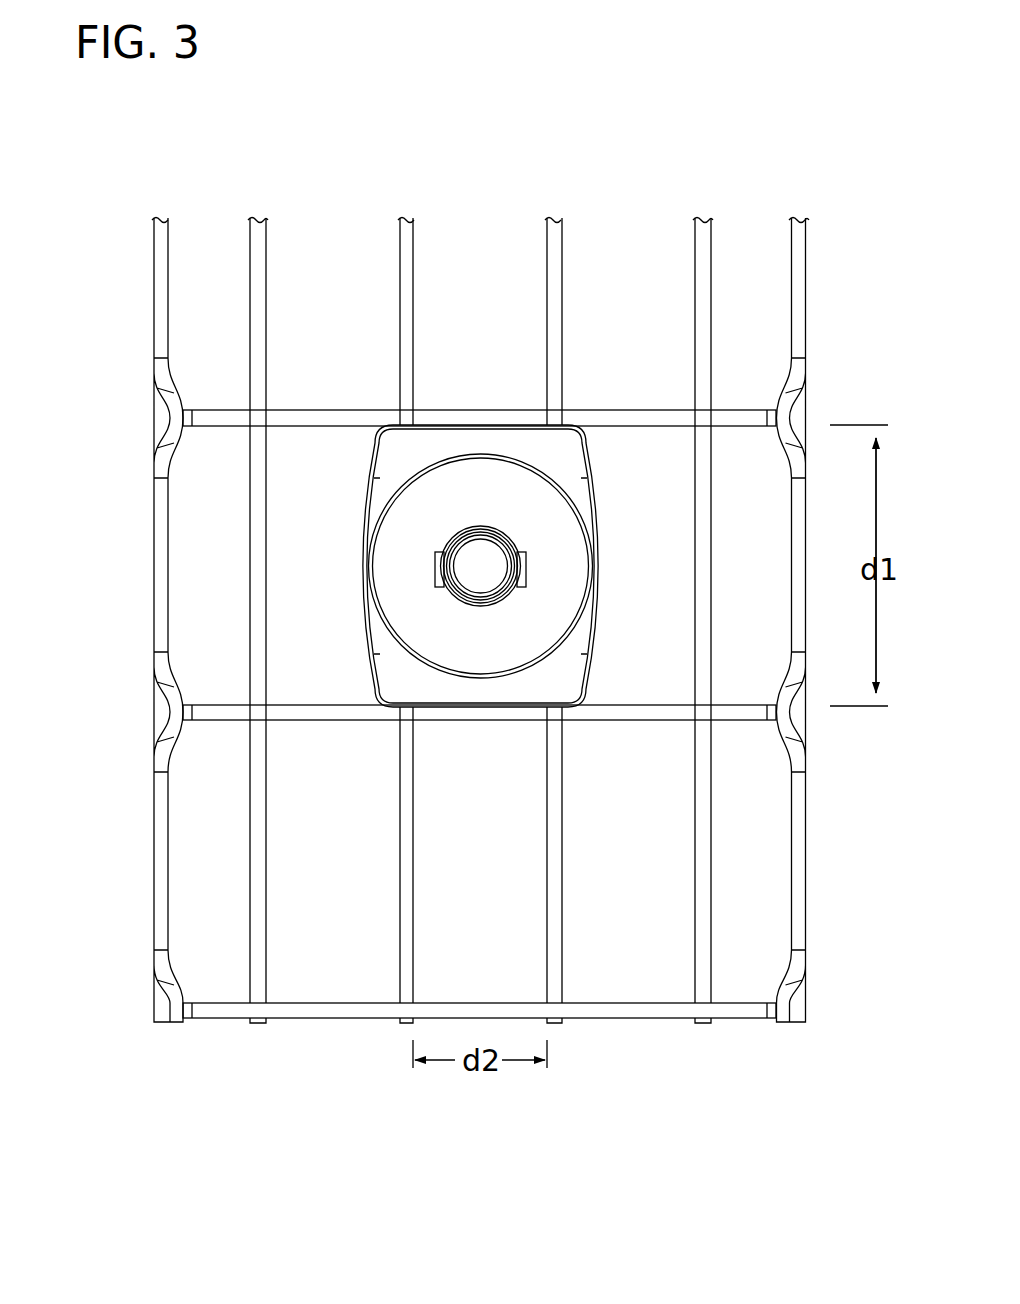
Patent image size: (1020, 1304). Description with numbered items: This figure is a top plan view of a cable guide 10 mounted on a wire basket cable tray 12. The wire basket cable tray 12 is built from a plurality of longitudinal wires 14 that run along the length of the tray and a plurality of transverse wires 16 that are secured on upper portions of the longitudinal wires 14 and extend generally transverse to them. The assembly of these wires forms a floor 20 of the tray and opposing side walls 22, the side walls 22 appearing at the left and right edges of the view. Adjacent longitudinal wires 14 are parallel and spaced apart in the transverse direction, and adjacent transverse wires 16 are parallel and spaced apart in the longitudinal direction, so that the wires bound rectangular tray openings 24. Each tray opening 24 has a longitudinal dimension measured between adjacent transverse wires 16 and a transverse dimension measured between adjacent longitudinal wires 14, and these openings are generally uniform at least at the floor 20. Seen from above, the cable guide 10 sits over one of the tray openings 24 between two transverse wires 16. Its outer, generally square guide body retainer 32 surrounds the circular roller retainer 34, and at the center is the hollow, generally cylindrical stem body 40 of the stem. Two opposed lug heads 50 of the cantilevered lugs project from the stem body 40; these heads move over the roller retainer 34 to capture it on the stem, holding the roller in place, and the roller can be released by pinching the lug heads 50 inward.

The cable guide 10 is at (333, 452).
The wire basket cable tray 12 is at (105, 372).
The longitudinal wires 14 is at (257, 790).
The transverse wires 16 is at (648, 418).
The floor 20 is at (624, 1022).
The side walls 22 is at (152, 608).
The tray openings 24 is at (668, 563).
The guide body retainer 32 is at (592, 468).
The roller retainer 34 is at (411, 525).
The stem body 40 is at (483, 531).
The lug heads 50 is at (436, 563).